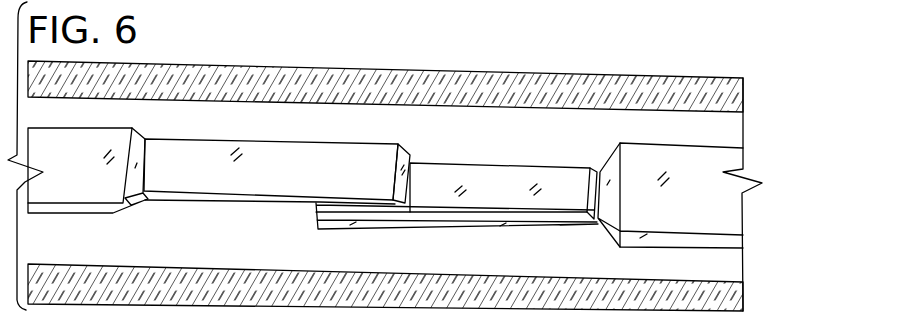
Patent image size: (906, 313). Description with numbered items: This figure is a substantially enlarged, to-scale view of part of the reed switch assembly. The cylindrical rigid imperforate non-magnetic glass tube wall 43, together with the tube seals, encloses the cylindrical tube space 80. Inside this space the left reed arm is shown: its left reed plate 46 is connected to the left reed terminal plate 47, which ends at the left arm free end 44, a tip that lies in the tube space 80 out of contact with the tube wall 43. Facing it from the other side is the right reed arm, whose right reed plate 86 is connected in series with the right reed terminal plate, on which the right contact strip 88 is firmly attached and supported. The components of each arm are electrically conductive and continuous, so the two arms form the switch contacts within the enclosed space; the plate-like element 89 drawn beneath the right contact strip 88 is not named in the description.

The housing wall 43 is at (435, 82).
The end face 44 is at (410, 155).
The left block member 46 is at (98, 175).
The central member 47 is at (248, 140).
The chamber 80 is at (188, 241).
The right block member 86 is at (690, 227).
The intermediate member 88 is at (513, 187).
The plate 89 is at (316, 221).